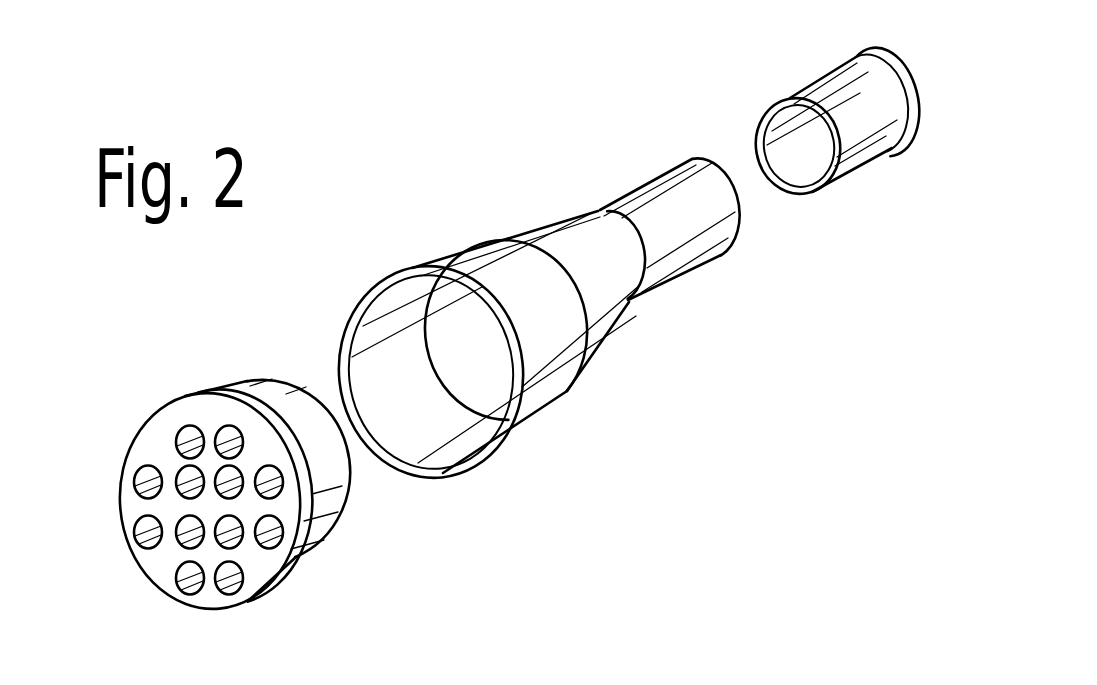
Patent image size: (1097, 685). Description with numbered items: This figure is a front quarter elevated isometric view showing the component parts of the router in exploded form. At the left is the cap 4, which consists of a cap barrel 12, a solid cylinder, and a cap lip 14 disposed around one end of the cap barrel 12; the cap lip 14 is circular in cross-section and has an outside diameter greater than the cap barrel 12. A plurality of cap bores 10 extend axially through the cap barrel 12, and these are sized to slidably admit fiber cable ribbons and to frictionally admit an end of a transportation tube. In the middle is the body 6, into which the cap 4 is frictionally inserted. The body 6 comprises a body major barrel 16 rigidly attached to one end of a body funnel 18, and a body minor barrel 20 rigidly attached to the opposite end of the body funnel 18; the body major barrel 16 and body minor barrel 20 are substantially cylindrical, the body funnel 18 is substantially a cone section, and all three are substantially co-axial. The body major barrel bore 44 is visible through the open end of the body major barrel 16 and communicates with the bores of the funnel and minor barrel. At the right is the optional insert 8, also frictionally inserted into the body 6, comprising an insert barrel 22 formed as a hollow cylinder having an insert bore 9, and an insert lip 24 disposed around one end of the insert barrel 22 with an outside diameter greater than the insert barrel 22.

The cap bores 10 is at (485, 1).
The cap 4 is at (150, 331).
The cap barrel 12 is at (211, 394).
The cap lip 14 is at (268, 388).
The body 6 is at (437, 173).
The body major barrel 16 is at (528, 412).
The body funnel 18 is at (602, 330).
The body minor barrel 20 is at (690, 265).
The body major barrel bore 44 is at (415, 437).
The insert 8 is at (745, 70).
The insert bore 9 is at (798, 158).
The insert barrel 22 is at (842, 178).
The insert lip 24 is at (908, 130).